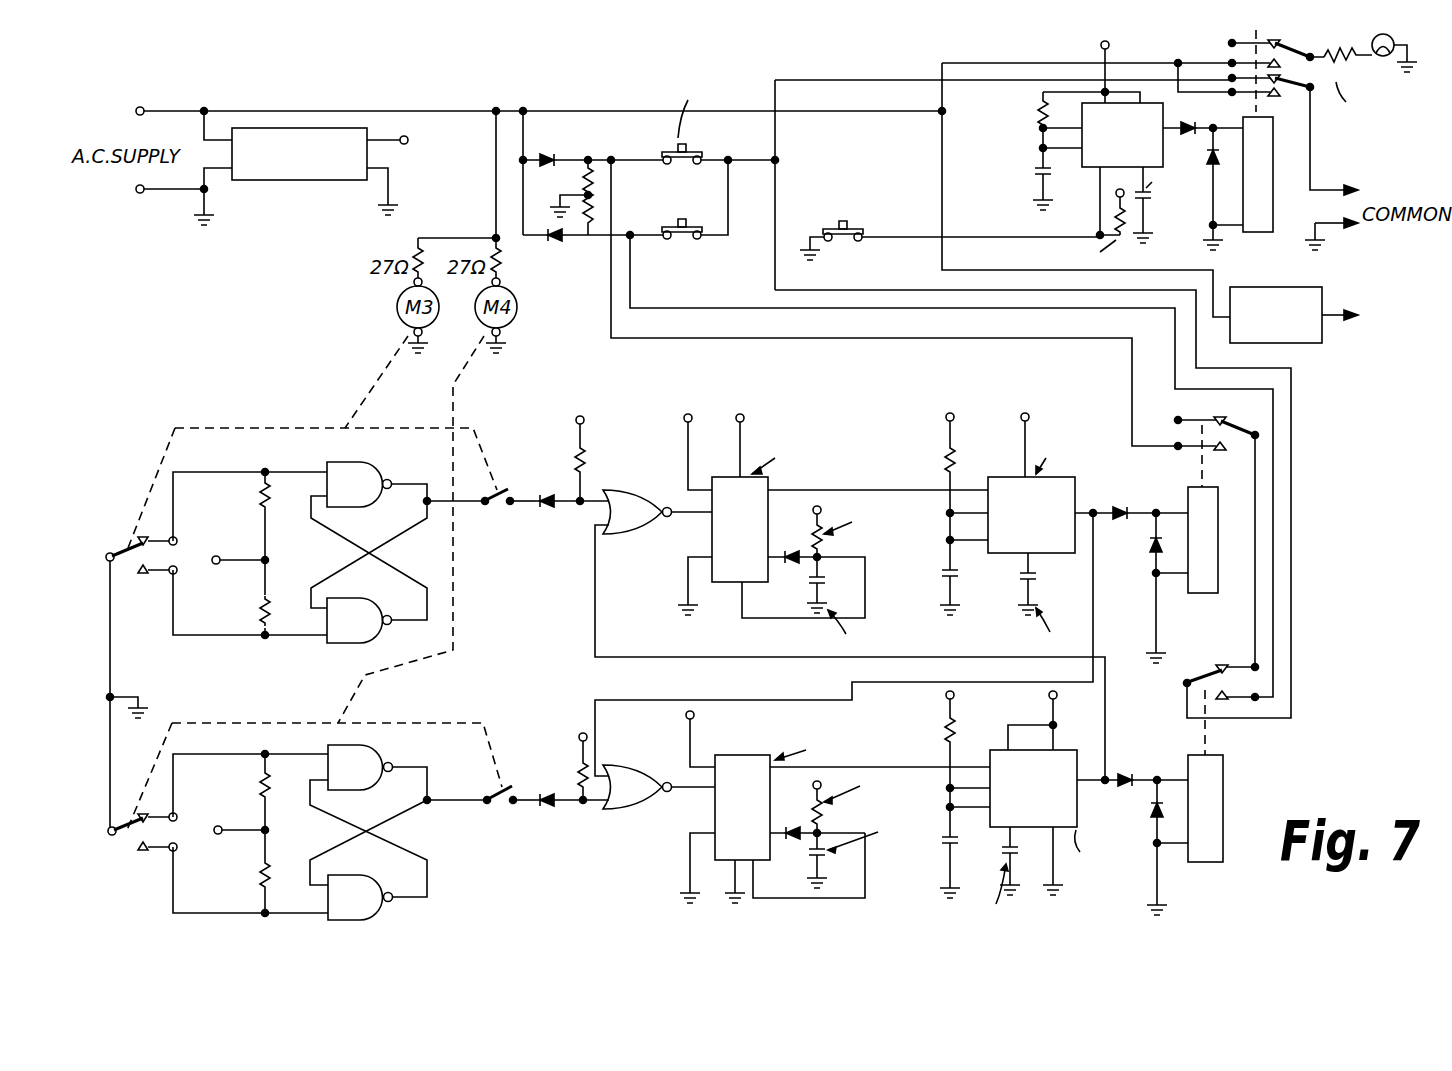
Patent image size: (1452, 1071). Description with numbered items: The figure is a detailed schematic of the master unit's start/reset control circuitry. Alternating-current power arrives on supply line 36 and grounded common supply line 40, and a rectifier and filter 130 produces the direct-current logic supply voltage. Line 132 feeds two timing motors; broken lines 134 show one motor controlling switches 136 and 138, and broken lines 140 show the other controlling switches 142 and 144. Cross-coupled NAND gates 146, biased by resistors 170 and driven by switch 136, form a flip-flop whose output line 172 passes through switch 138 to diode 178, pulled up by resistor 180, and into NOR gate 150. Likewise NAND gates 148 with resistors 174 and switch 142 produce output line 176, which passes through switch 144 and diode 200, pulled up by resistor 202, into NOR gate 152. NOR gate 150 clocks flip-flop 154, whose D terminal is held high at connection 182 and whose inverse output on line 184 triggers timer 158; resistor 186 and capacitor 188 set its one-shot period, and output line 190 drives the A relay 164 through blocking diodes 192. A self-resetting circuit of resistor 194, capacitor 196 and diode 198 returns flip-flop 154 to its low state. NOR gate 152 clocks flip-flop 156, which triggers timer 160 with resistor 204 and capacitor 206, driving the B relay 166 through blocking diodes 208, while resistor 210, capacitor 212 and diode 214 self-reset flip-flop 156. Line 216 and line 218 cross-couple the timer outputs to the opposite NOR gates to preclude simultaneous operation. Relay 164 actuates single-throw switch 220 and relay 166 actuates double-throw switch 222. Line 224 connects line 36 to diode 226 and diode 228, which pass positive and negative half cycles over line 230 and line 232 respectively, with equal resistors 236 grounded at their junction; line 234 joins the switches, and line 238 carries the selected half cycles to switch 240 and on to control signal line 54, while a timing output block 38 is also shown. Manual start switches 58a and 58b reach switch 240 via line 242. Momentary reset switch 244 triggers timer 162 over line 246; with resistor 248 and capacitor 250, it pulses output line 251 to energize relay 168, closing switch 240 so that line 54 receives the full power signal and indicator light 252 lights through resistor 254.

The alternating-current supply line 36 is at (166, 111).
The timing output block 38 is at (1326, 308).
The common supply line 40 is at (152, 194).
The control signal line 54 is at (1322, 188).
The manual start A switch 58a is at (690, 144).
The manual start B switch 58b is at (693, 204).
The rectifier and filter 130 is at (277, 182).
The line 132 is at (494, 180).
The broken lines 134 is at (345, 385).
The switch 136 is at (142, 583).
The switch 138 is at (514, 516).
The broken lines 140 is at (452, 632).
The switch 142 is at (124, 856).
The switch 144 is at (500, 818).
The cross-coupled NAND gates 146 is at (366, 508).
The cross-coupled NAND gates 148 is at (370, 790).
The NOR gate 150 is at (612, 490).
The NOR gate 152 is at (625, 762).
The flip-flop 154 is at (710, 532).
The flip-flop 156 is at (738, 752).
The timer 158 is at (1052, 558).
The timer 160 is at (1070, 728).
The timer 162 is at (1085, 170).
The A relay 164 is at (1188, 598).
The B relay 166 is at (1226, 762).
The reset relay 168 is at (1273, 200).
The resistors 170 is at (280, 500).
The output line 172 is at (472, 512).
The resistors 174 is at (280, 792).
The output line 176 is at (466, 818).
The diode 178 is at (548, 512).
The resistor 180 is at (588, 462).
The D terminal connection 182 is at (688, 442).
The line 184 is at (858, 490).
The resistor 186 is at (956, 452).
The capacitor 188 is at (960, 578).
The output line 190 is at (1098, 508).
The blocking diodes 192 is at (1118, 534).
The resistor 194 is at (838, 544).
The capacitor 196 is at (810, 586).
The diode 198 is at (806, 552).
The diode 200 is at (549, 812).
The resistor 202 is at (580, 764).
The resistor 204 is at (958, 728).
The capacitor 206 is at (964, 864).
The blocking diodes 208 is at (1128, 772).
The resistor 210 is at (824, 822).
The capacitor 212 is at (838, 852).
The diode 214 is at (795, 846).
The line 216 is at (742, 698).
The line 218 is at (740, 642).
The single throw switch 220 is at (1246, 444).
The double-throw switch 222 is at (1198, 660).
The line 224 is at (528, 150).
The diode 226 is at (575, 155).
The diode 228 is at (556, 242).
The line 230 is at (972, 342).
The line 232 is at (1138, 316).
The line 234 is at (1258, 480).
The resistors 236 is at (597, 210).
The line 238 is at (1293, 525).
The switch 240 is at (1292, 49).
The line 242 is at (748, 164).
The reset switch 244 is at (848, 214).
The line 246 is at (966, 240).
The resistor 248 is at (1038, 108).
The capacitor 250 is at (1040, 164).
The output line 251 is at (1192, 104).
The indicator light 252 is at (1406, 38).
The resistor 254 is at (1314, 92).